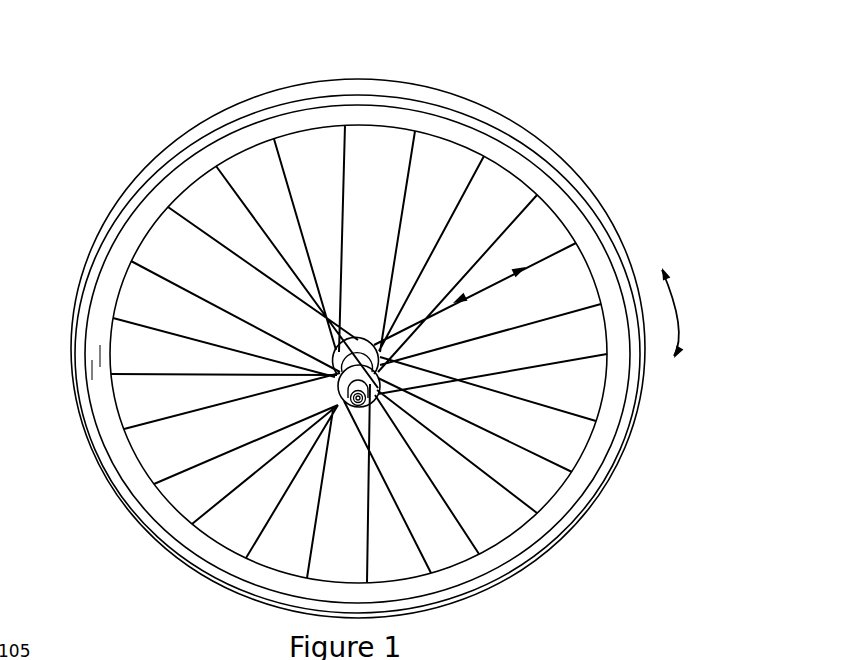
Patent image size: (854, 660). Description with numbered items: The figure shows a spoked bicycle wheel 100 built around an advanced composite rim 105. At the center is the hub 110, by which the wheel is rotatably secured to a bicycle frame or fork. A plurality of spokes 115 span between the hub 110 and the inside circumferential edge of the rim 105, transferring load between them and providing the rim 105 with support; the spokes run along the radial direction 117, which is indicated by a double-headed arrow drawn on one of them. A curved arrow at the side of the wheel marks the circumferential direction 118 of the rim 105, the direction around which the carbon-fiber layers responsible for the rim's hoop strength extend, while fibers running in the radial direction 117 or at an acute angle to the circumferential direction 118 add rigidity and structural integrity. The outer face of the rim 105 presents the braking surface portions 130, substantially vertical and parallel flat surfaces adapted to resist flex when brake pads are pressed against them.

The bicycle wheel 100 is at (150, 93).
The composite rim 105 is at (458, 102).
The hub 110 is at (347, 338).
The spokes 115 is at (400, 214).
The radial direction 117 is at (503, 272).
The circumferential direction 118 is at (686, 325).
The braking surface portions 130 is at (638, 414).